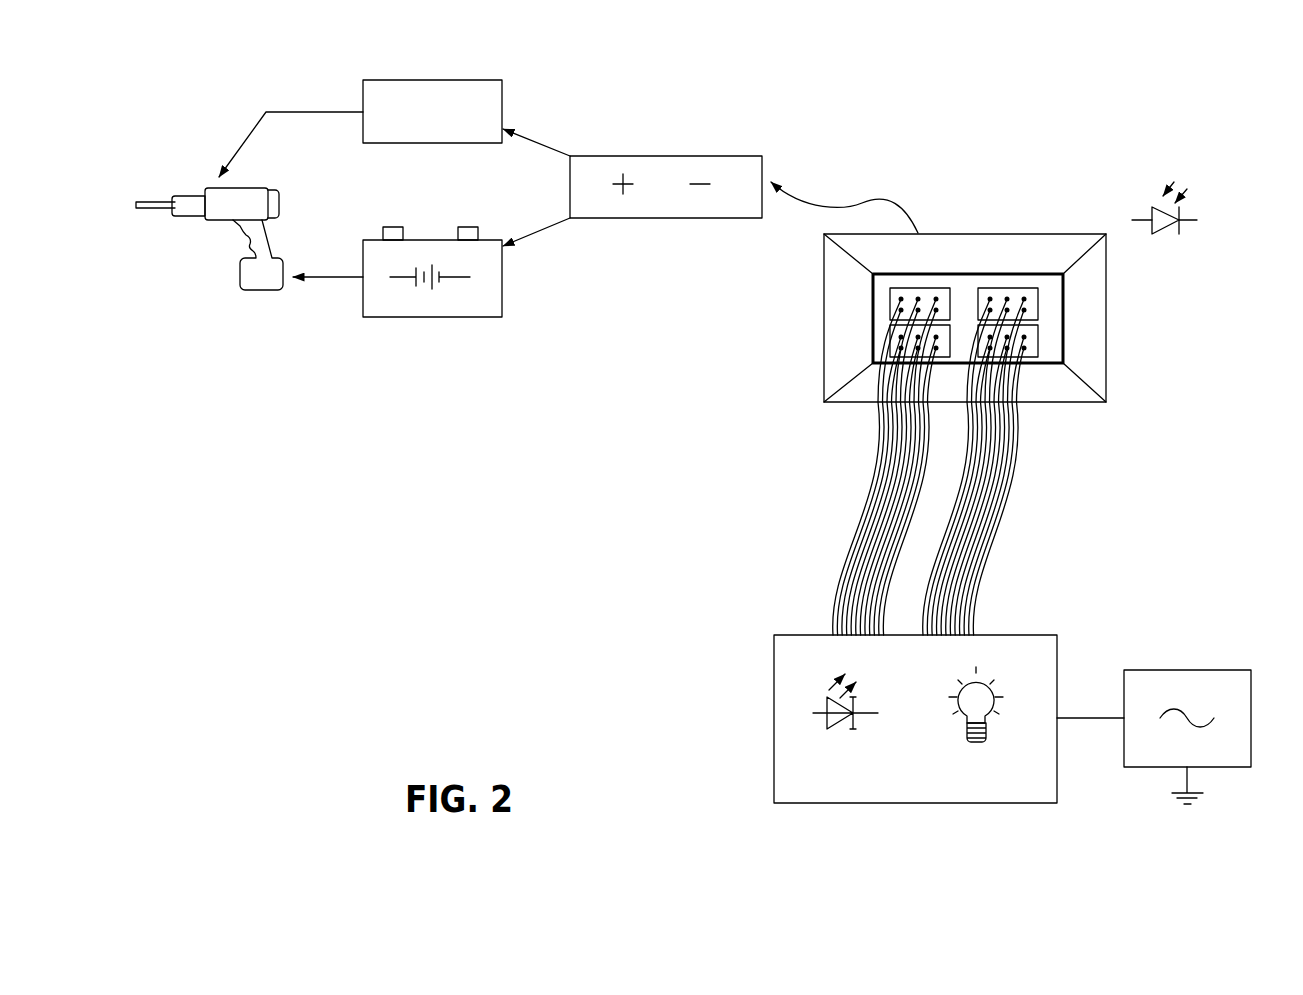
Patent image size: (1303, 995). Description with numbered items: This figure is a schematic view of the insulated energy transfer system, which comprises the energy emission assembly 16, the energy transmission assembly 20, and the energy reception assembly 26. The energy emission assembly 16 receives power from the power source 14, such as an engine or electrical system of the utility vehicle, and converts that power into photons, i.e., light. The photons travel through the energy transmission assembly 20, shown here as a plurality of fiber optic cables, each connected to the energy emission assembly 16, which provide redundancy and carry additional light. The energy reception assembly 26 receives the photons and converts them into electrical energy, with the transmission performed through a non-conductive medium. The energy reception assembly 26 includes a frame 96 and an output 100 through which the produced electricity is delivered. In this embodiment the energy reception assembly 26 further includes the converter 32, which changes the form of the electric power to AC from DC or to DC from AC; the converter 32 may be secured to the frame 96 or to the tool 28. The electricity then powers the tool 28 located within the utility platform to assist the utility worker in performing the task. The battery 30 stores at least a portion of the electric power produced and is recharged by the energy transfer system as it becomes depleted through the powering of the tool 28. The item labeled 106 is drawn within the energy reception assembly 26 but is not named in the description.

The power source 14 is at (1230, 670).
The energy emission assembly 16 is at (868, 803).
The energy transmission assembly 20 is at (876, 496).
The energy reception assembly 26 is at (1095, 211).
The tool 28 is at (226, 248).
The battery 30 is at (410, 318).
The converter 32 is at (410, 144).
The frame 96 is at (1095, 317).
The output 100 is at (673, 156).
The photovoltaic cell panel 106 is at (1032, 290).